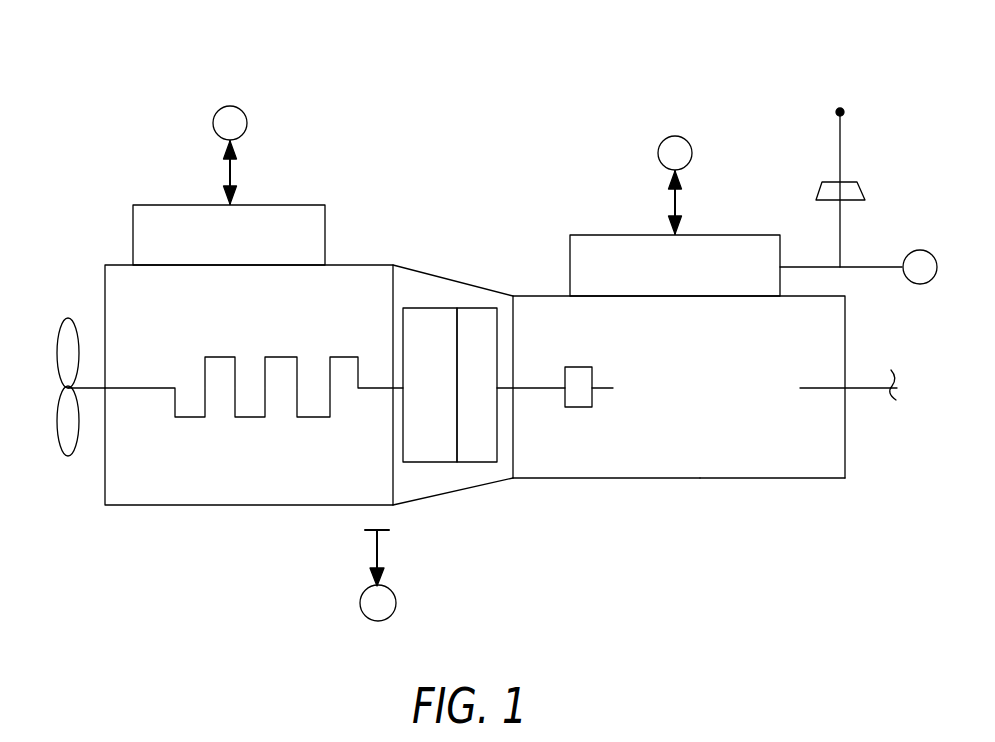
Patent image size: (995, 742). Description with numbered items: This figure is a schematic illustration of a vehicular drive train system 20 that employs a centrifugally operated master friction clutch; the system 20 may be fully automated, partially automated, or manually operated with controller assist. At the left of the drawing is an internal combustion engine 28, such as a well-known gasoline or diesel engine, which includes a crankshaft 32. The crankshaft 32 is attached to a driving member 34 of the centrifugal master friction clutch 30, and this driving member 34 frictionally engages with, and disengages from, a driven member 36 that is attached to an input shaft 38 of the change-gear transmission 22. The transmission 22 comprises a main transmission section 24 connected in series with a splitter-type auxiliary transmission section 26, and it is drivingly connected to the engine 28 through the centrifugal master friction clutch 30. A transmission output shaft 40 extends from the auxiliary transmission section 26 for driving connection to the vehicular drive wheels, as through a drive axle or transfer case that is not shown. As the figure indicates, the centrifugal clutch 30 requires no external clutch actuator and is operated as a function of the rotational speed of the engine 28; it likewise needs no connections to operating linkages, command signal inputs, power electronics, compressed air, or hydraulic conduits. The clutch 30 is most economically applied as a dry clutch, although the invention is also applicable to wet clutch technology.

The vehicular drive train system 20 is at (344, 99).
The change-gear transmission 22 is at (727, 516).
The main transmission section 24 is at (587, 478).
The splitter-type auxiliary transmission section 26 is at (787, 470).
The internal combustion engine 28 is at (166, 523).
The centrifugal master friction clutch 30 is at (480, 250).
The crankshaft 32 is at (205, 368).
The driving member 34 is at (440, 322).
The driven member 36 is at (473, 457).
The input shaft 38 is at (598, 389).
The transmission output shaft 40 is at (880, 385).